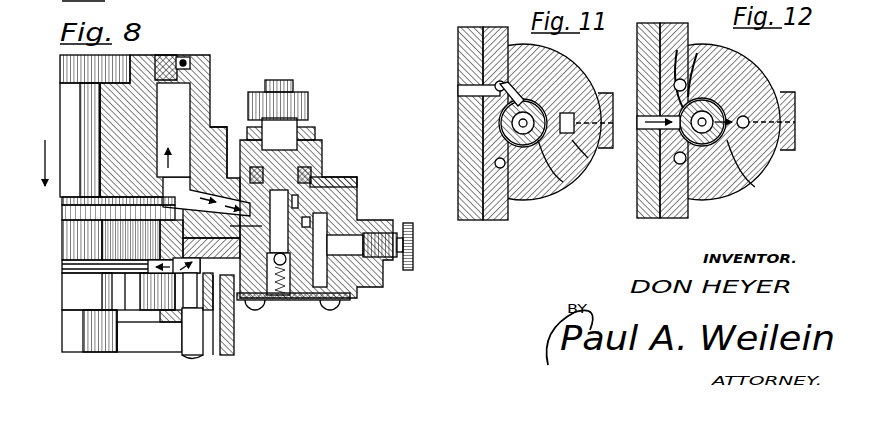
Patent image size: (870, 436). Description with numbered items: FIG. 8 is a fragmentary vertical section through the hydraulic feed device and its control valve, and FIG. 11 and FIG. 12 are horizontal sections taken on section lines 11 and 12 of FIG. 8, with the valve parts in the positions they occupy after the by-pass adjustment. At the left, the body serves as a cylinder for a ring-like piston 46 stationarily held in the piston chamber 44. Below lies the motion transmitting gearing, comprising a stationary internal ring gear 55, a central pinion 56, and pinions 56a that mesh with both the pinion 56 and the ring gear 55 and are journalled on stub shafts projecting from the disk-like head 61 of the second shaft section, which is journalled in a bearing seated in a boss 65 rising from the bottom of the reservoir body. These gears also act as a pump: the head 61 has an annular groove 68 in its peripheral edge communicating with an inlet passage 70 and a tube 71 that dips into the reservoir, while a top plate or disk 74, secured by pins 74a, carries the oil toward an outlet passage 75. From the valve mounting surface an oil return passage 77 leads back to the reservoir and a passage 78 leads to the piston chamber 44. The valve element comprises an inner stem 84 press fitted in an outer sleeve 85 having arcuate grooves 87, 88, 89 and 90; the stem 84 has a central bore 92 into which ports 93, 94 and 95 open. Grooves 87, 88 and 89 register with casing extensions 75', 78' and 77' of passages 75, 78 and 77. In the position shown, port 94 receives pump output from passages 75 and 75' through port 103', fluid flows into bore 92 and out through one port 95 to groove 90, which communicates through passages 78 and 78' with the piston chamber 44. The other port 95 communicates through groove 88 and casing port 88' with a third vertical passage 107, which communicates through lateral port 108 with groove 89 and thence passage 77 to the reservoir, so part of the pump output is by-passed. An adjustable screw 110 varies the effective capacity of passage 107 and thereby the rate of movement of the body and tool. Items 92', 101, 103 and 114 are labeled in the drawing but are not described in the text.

In FIG. 8, the piston chamber 44 is at (173, 130).
In FIG. 8, the ring-like piston 46 is at (165, 55).
In FIG. 8, the internal ring gear 55 is at (188, 248).
In FIG. 8, the pinion 56 is at (70, 235).
In FIG. 8, the pinions 56a is at (118, 241).
In FIG. 8, the disk-like head 61 is at (83, 279).
In FIG. 8, the boss 65 is at (278, 266).
In FIG. 8, the annular groove 68 is at (115, 279).
In FIG. 8, the inlet passage 70 is at (187, 279).
In FIG. 8, the tube 71 is at (182, 337).
In FIG. 8, the top plate or disk 74 is at (72, 211).
In FIG. 8, the pins 74a is at (143, 193).
In FIG. 11, the outlet passage 75 is at (465, 87).
In FIG. 11, the extension of pump outlet passage 75' is at (493, 46).
In FIG. 8, the oil return passage 77 is at (214, 186).
In FIG. 8, the extension of return passage 77' is at (193, 259).
In FIG. 8, the passage 78 is at (221, 139).
In FIG. 12, the passage 78 is at (674, 133).
In FIG. 8, the extension of piston chamber passage 78' is at (228, 228).
In FIG. 12, the extension of piston chamber passage 78' is at (638, 82).
In FIG. 8, the inner stem 84 is at (283, 123).
In FIG. 8, the outer sleeve 85 is at (258, 306).
In FIG. 8, the arcuate groove 87 is at (301, 200).
In FIG. 11, the arcuate groove 87 is at (562, 174).
In FIG. 8, the arcuate groove 88 is at (341, 225).
In FIG. 12, the arcuate groove 88 is at (729, 99).
In FIG. 8, the port 88' is at (351, 180).
In FIG. 8, the arcuate groove 89 is at (260, 305).
In FIG. 8, the arcuate groove 90 is at (236, 197).
In FIG. 12, the arcuate groove 90 is at (688, 48).
In FIG. 11, the central bore 92 is at (530, 163).
In FIG. 12, the central bore 92 is at (714, 163).
In FIG. 8, the bore 92' is at (292, 317).
In FIG. 11, the port 93 is at (545, 117).
In FIG. 8, the port 94 is at (322, 160).
In FIG. 11, the port 94 is at (507, 108).
In FIG. 12, the ports 95 is at (674, 159).
In FIG. 11, the hole 101 is at (494, 164).
In FIG. 12, the hole 101 is at (660, 193).
In FIG. 11, the passage 103 is at (521, 68).
In FIG. 12, the passage 103 is at (741, 53).
In FIG. 11, the port 103' is at (566, 55).
In FIG. 8, the third vertical passage 107 is at (323, 285).
In FIG. 11, the third vertical passage 107 is at (572, 128).
In FIG. 12, the third vertical passage 107 is at (774, 93).
In FIG. 8, the lateral port 108 is at (364, 281).
In FIG. 8, the adjustable screw 110 is at (414, 262).
In FIG. 8, the gear 114 is at (309, 104).
In FIG. 8, the section line 11 is at (363, 188).
In FIG. 8, the section line 12 is at (385, 200).